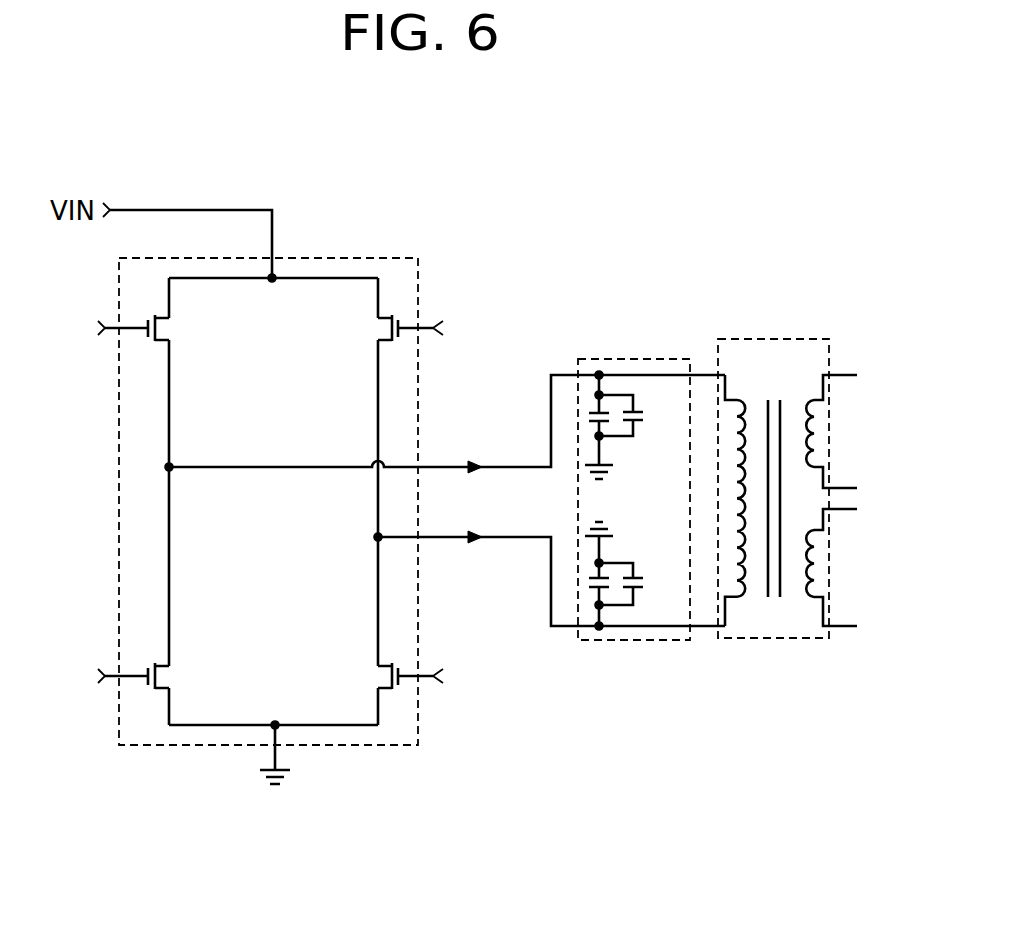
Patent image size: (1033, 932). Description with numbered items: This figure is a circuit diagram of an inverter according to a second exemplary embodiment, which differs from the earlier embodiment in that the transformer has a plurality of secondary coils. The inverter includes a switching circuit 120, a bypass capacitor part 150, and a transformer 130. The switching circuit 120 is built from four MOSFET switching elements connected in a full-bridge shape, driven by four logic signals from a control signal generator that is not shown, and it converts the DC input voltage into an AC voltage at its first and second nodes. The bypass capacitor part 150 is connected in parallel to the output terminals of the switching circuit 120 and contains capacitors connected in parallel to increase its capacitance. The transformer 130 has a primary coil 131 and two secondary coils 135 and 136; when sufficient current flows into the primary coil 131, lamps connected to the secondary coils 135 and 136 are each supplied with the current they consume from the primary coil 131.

The switching circuit 120 is at (365, 257).
The bypass capacitor part 150 is at (633, 358).
The transformer 130 is at (777, 338).
The primary coil 131 is at (741, 598).
The secondary coil 135 is at (833, 375).
The secondary coil 136 is at (843, 628).